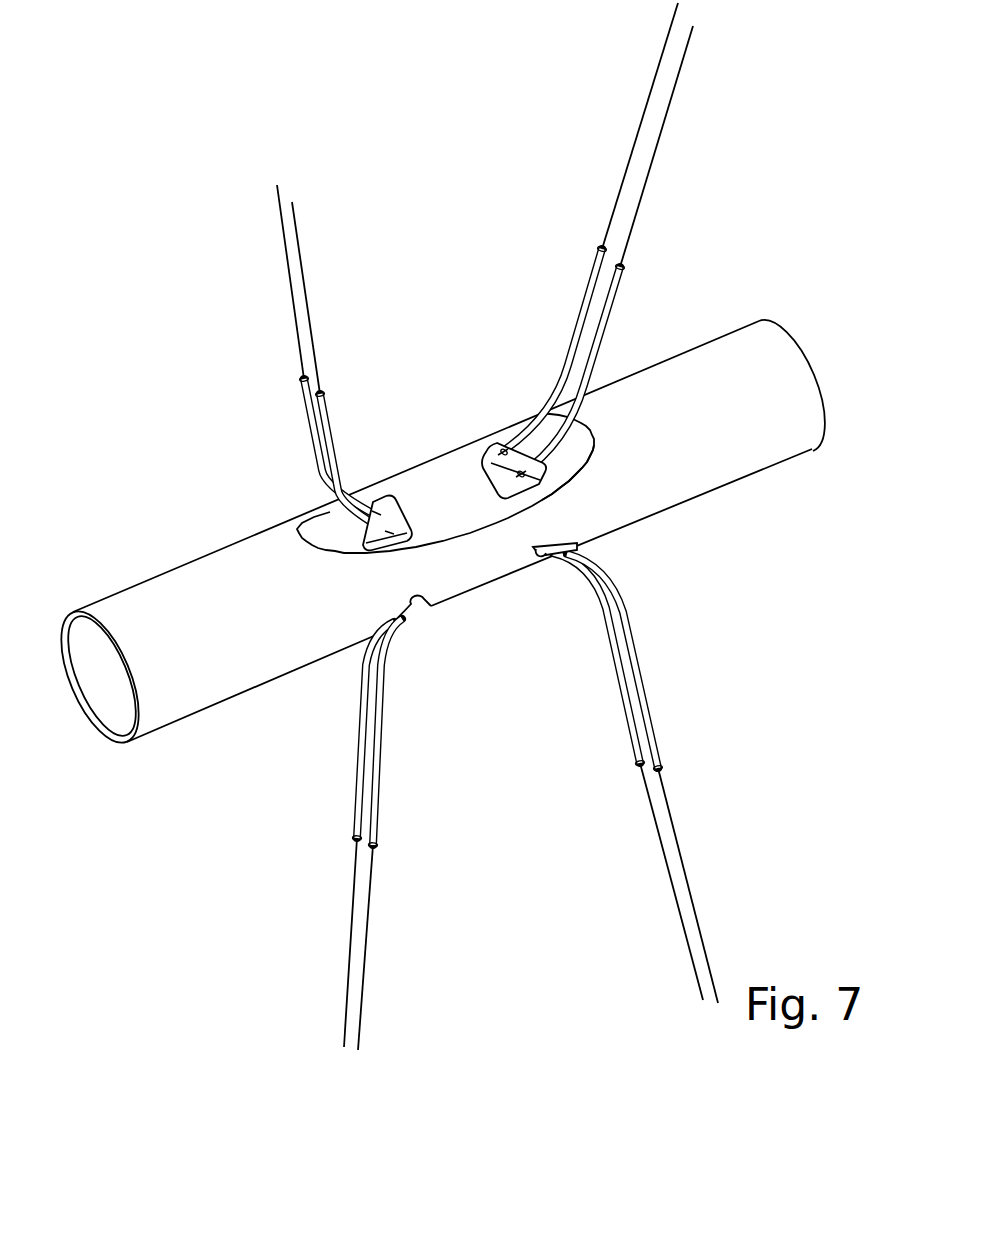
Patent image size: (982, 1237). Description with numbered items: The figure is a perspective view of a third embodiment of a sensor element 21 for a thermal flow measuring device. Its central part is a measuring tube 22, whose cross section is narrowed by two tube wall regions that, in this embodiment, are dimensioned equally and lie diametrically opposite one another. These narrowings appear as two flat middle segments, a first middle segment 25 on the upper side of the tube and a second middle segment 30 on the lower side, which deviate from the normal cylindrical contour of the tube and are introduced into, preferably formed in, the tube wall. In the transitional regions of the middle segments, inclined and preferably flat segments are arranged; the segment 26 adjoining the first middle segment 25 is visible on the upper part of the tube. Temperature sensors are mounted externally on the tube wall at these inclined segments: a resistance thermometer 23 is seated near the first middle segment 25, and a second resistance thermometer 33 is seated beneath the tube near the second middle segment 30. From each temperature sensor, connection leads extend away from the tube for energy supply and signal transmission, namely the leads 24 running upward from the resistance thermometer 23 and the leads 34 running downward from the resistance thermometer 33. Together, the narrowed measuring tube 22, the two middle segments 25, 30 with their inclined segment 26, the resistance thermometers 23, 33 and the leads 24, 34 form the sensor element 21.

The sensor element 21 is at (462, 212).
The measuring tube 22 is at (770, 362).
The resistance thermometer 23 is at (485, 455).
The lead for signal transmission and/or energy supply 24 is at (615, 283).
The first middle segment 25 is at (435, 487).
The first and/or third segment 26 is at (543, 482).
The second middle segment 30 is at (463, 580).
The resistance thermometer 33 is at (540, 557).
The lead for signal transmission and/or energy supply 34 is at (645, 705).